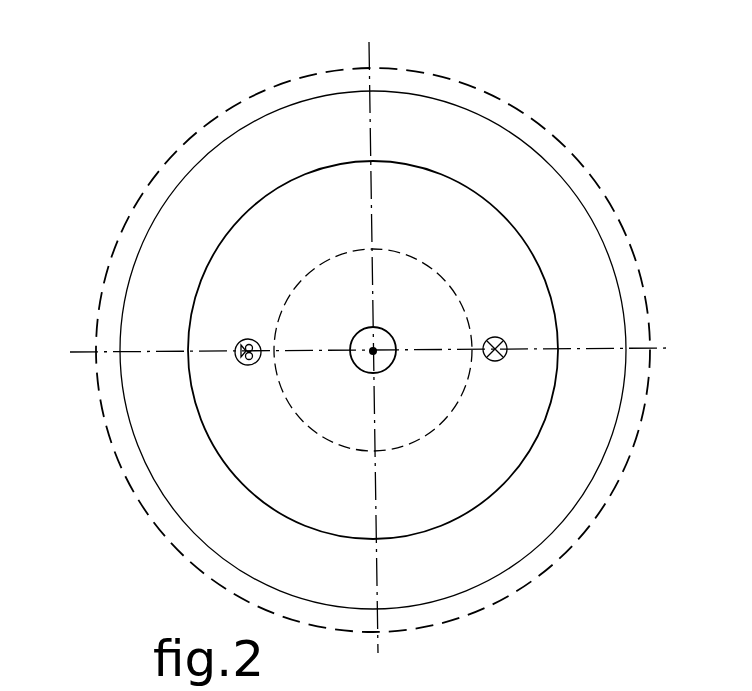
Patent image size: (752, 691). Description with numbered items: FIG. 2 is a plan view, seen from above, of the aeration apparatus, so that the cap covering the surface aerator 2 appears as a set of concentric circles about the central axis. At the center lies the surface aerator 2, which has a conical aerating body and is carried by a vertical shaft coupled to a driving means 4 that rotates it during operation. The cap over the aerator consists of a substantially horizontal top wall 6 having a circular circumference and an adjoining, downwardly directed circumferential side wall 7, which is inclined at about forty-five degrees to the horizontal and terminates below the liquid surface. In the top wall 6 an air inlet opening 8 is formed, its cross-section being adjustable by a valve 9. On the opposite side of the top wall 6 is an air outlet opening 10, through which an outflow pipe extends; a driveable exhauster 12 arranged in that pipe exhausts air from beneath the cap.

The surface aerator 2 is at (320, 262).
The driving means 4 is at (365, 328).
The top wall 6 is at (437, 205).
The circumferential side wall 7 is at (592, 287).
The air inlet opening 8 is at (500, 341).
The valve 9 is at (505, 357).
The air outlet opening 10 is at (243, 342).
The driveable exhauster 12 is at (243, 362).